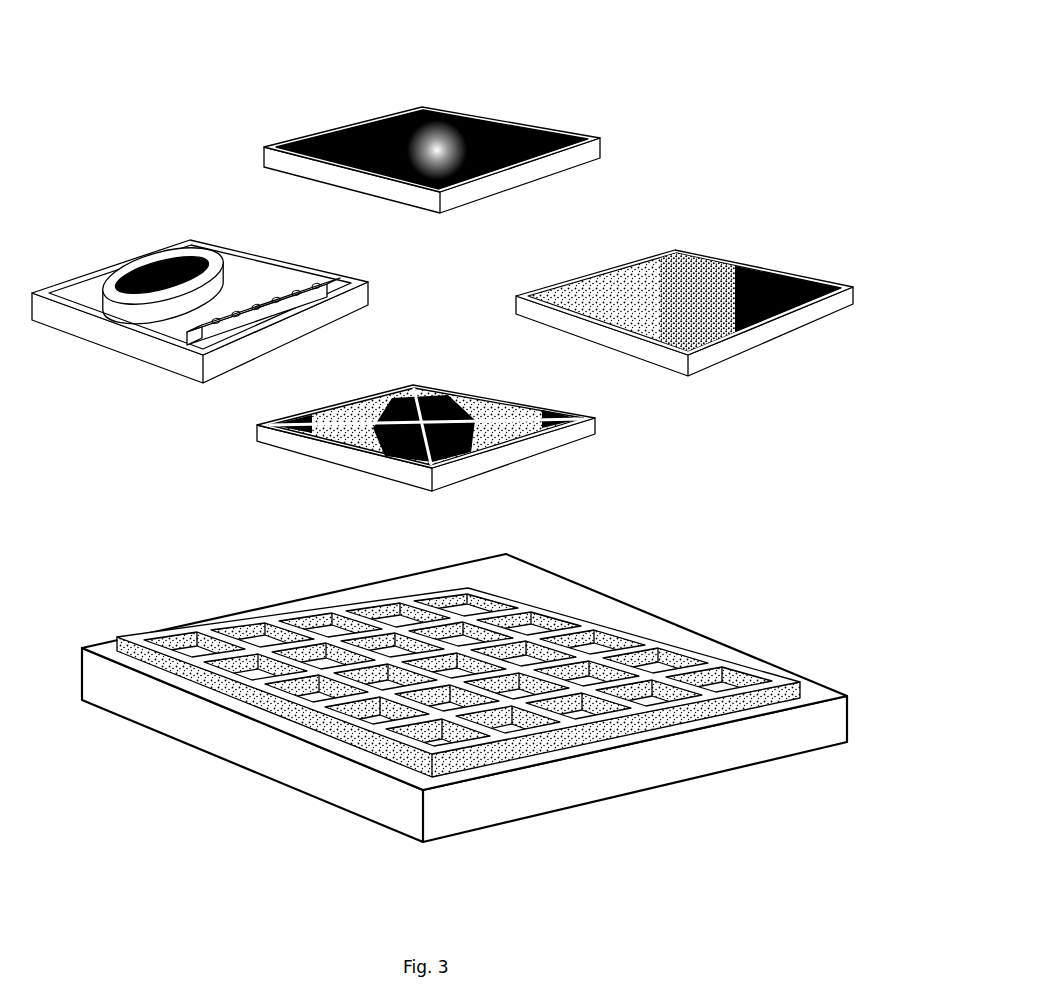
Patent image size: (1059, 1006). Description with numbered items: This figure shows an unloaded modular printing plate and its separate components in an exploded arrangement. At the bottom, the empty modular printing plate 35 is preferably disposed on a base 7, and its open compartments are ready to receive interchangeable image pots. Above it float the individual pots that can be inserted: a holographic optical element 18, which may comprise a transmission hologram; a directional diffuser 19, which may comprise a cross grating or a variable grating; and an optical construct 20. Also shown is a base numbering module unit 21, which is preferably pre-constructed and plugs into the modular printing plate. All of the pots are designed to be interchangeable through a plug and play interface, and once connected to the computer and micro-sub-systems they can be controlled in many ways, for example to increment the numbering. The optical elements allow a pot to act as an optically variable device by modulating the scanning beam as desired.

The base 7 is at (664, 768).
The holographic optical element (HOE) 18 is at (539, 113).
The directional diffuser 19 is at (746, 245).
The optical construct 20 is at (556, 441).
The base numbering module unit 21 is at (147, 238).
The empty modular printing plate 35 is at (271, 605).